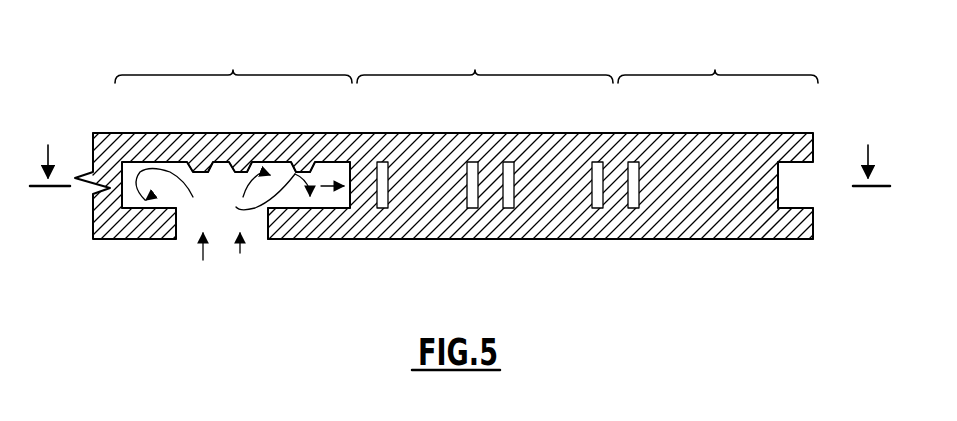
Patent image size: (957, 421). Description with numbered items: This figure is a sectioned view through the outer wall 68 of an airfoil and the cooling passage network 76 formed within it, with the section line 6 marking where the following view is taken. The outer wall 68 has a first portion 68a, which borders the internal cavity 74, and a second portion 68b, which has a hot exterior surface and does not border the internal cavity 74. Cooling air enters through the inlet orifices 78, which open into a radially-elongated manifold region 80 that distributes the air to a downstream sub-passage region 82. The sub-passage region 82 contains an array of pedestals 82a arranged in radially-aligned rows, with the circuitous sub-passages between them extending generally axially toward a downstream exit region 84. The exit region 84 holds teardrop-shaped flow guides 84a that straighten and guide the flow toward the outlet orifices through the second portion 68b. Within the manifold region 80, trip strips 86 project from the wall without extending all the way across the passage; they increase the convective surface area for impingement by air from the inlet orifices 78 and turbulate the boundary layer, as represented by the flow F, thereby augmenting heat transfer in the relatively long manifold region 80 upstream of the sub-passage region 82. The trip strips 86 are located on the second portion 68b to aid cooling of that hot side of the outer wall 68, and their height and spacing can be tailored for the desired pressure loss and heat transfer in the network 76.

The section line 6- 6 is at (460, 151).
The outer wall 68 is at (724, 247).
The first portion 68a is at (632, 240).
The second portion 68b is at (532, 133).
The internal cavity 74 is at (325, 277).
The cooling passage network 76 is at (824, 246).
The inlet orifices 78 is at (178, 229).
The manifold region 80 is at (233, 70).
The sub-passage region 82 is at (475, 70).
The pedestals 82a is at (427, 187).
The exit region 84 is at (715, 70).
The flow guides 84a is at (763, 187).
The trip strips 86 is at (236, 207).
The turbulated flow F is at (134, 171).